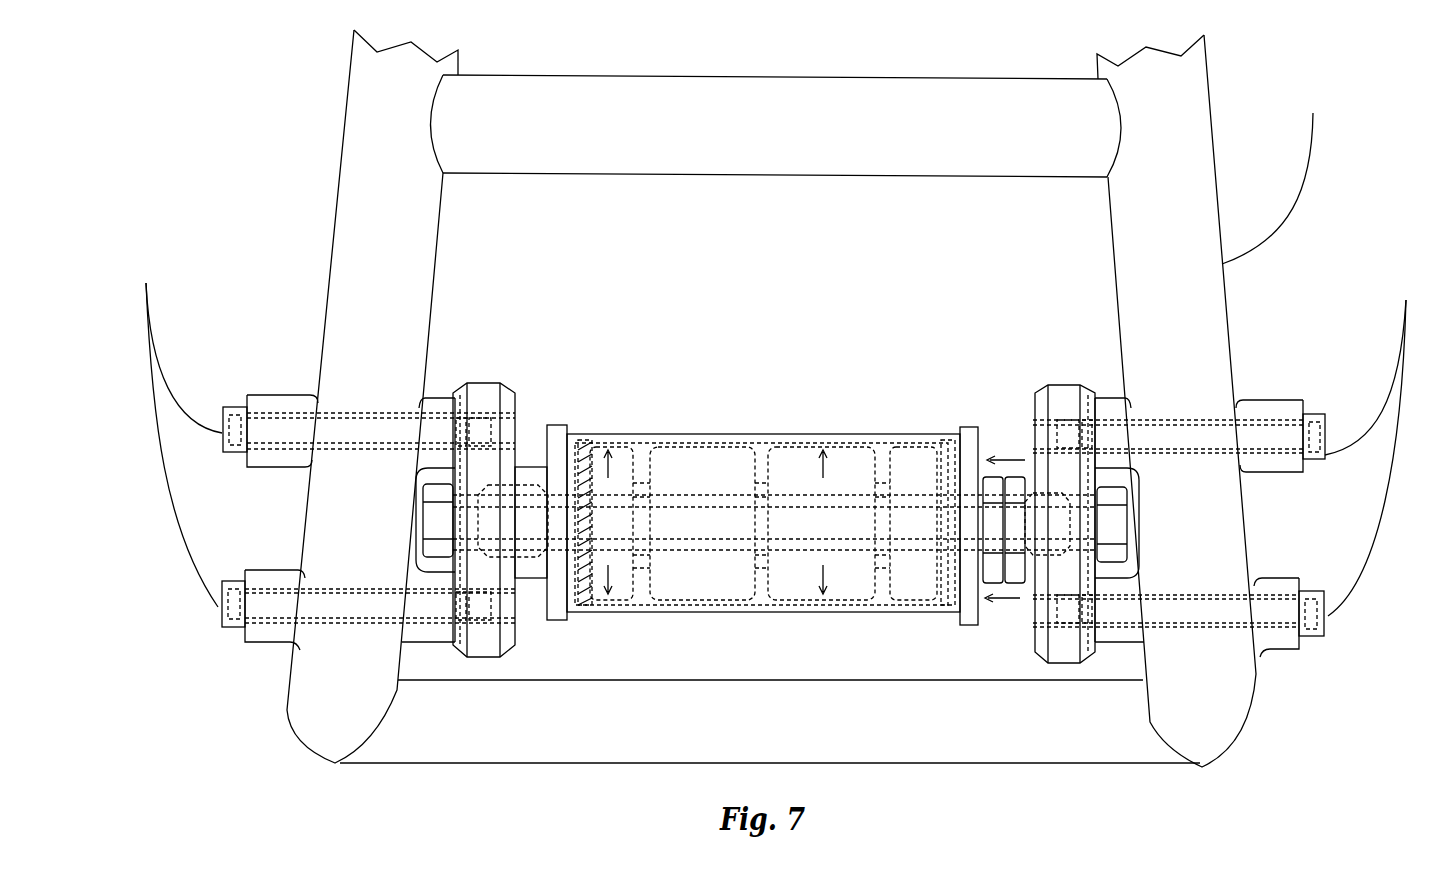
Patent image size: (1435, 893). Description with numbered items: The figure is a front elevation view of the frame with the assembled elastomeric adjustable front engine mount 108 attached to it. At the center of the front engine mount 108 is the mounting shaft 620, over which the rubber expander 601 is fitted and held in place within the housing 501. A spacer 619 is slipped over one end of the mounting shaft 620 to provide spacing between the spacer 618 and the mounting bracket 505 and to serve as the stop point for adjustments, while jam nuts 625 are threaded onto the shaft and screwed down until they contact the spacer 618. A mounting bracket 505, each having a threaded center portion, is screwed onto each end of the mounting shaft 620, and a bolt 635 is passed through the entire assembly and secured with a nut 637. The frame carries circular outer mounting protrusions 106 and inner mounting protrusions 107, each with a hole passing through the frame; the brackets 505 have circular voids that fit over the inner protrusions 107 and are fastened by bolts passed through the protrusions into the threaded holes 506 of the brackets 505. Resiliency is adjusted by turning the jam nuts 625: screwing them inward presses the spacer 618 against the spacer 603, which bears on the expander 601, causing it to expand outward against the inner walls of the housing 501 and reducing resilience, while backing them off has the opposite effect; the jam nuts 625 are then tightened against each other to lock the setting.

The housing 501 is at (777, 435).
The outer mounting protrusion 106 is at (295, 395).
The inner mounting protrusion 107 is at (442, 395).
The mounting bracket 505 is at (490, 385).
The threaded hole 506 is at (497, 432).
The spacer 618 is at (557, 427).
The spacer 619 is at (582, 450).
The mounting shaft 620 is at (563, 612).
The rubber expander 601 is at (740, 460).
The front engine mount 108 is at (857, 434).
The spacer 603 is at (945, 605).
The jam nuts 625 is at (995, 527).
The bolt 635 is at (427, 530).
The nut 637 is at (1120, 495).